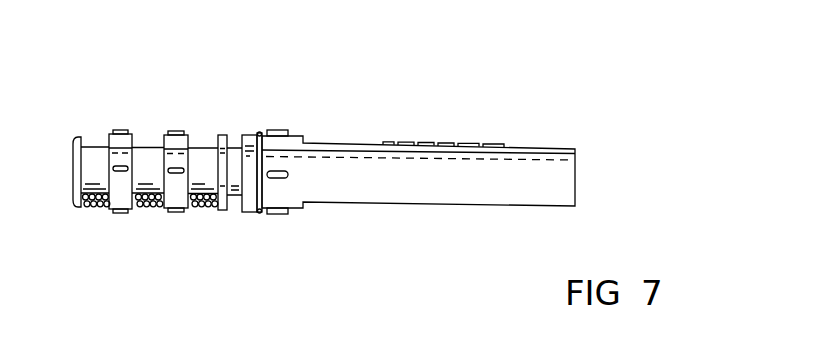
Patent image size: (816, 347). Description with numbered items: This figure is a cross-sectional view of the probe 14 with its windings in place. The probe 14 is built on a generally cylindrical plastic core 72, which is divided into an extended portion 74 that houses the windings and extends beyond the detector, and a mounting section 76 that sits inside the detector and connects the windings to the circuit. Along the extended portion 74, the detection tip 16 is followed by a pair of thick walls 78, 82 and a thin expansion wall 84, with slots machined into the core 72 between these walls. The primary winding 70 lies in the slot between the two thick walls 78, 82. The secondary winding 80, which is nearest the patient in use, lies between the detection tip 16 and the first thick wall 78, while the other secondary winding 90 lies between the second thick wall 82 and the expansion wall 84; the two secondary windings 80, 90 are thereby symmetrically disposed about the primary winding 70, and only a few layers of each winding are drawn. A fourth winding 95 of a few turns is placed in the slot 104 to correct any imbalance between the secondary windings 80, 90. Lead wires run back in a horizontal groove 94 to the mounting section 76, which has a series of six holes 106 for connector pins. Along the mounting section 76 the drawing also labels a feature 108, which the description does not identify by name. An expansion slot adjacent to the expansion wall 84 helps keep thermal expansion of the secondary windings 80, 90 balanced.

The probe 14 is at (302, 175).
The detection tip 16 is at (72, 178).
The primary winding 70 is at (148, 208).
The core 72 is at (421, 215).
The extended portion 74 is at (237, 89).
The mounting section 76 is at (569, 94).
The thick wall 78 is at (117, 137).
The secondary winding 80 is at (93, 208).
The thick wall 82 is at (177, 136).
The expansion wall 84 is at (222, 136).
The secondary winding 90 is at (203, 210).
The horizontal groove 94 is at (127, 148).
The fourth winding 95 is at (260, 213).
The slot 104 is at (260, 139).
The holes 106 is at (238, 147).
The notches 108 is at (433, 147).